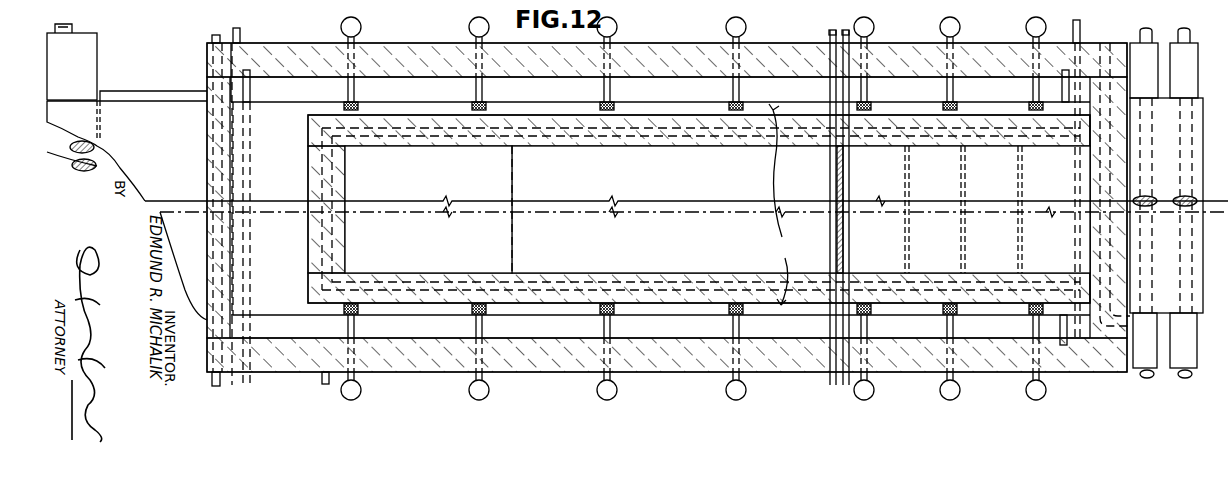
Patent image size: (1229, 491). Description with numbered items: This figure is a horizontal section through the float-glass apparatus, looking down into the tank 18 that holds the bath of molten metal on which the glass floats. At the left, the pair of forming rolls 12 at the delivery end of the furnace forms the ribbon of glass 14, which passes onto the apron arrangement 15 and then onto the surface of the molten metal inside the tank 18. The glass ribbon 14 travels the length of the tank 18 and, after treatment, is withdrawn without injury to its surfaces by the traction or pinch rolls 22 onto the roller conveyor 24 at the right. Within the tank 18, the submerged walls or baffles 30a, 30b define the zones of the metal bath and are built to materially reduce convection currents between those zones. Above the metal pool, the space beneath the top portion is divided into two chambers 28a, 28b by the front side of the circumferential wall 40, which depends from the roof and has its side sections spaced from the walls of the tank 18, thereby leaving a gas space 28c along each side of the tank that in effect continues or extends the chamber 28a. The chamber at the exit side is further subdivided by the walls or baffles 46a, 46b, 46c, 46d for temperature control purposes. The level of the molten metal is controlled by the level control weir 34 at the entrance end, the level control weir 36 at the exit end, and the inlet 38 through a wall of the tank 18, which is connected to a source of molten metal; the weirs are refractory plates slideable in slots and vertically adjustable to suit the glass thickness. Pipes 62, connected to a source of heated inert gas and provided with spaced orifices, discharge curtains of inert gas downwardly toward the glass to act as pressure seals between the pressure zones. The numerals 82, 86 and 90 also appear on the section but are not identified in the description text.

The forming rolls 12 is at (98, 57).
The ribbon of glass 14 is at (164, 108).
The apron arrangement 15 is at (117, 91).
The tank 18 is at (395, 43).
The traction or pinch rolls 22 is at (1136, 363).
The roller conveyor 24 is at (1171, 369).
The chamber 28a is at (267, 208).
The chamber 28b is at (585, 209).
The gas space 28c is at (784, 204).
The submerged wall or baffle 30a is at (308, 131).
The submerged wall or baffle 30b is at (513, 197).
The level control weir 34 is at (248, 93).
The level control weir 36 is at (1054, 340).
The inlet 38 is at (320, 376).
The circumferential wall 40 is at (346, 217).
The wall or baffle 46a is at (835, 220).
The wall or baffle 46b is at (905, 176).
The wall or baffle 46c is at (961, 178).
The wall or baffle 46d is at (1018, 178).
The pipe 62 is at (213, 39).
The nut 82 is at (700, 303).
The shaft 86 is at (600, 376).
The motor 90 is at (724, 27).